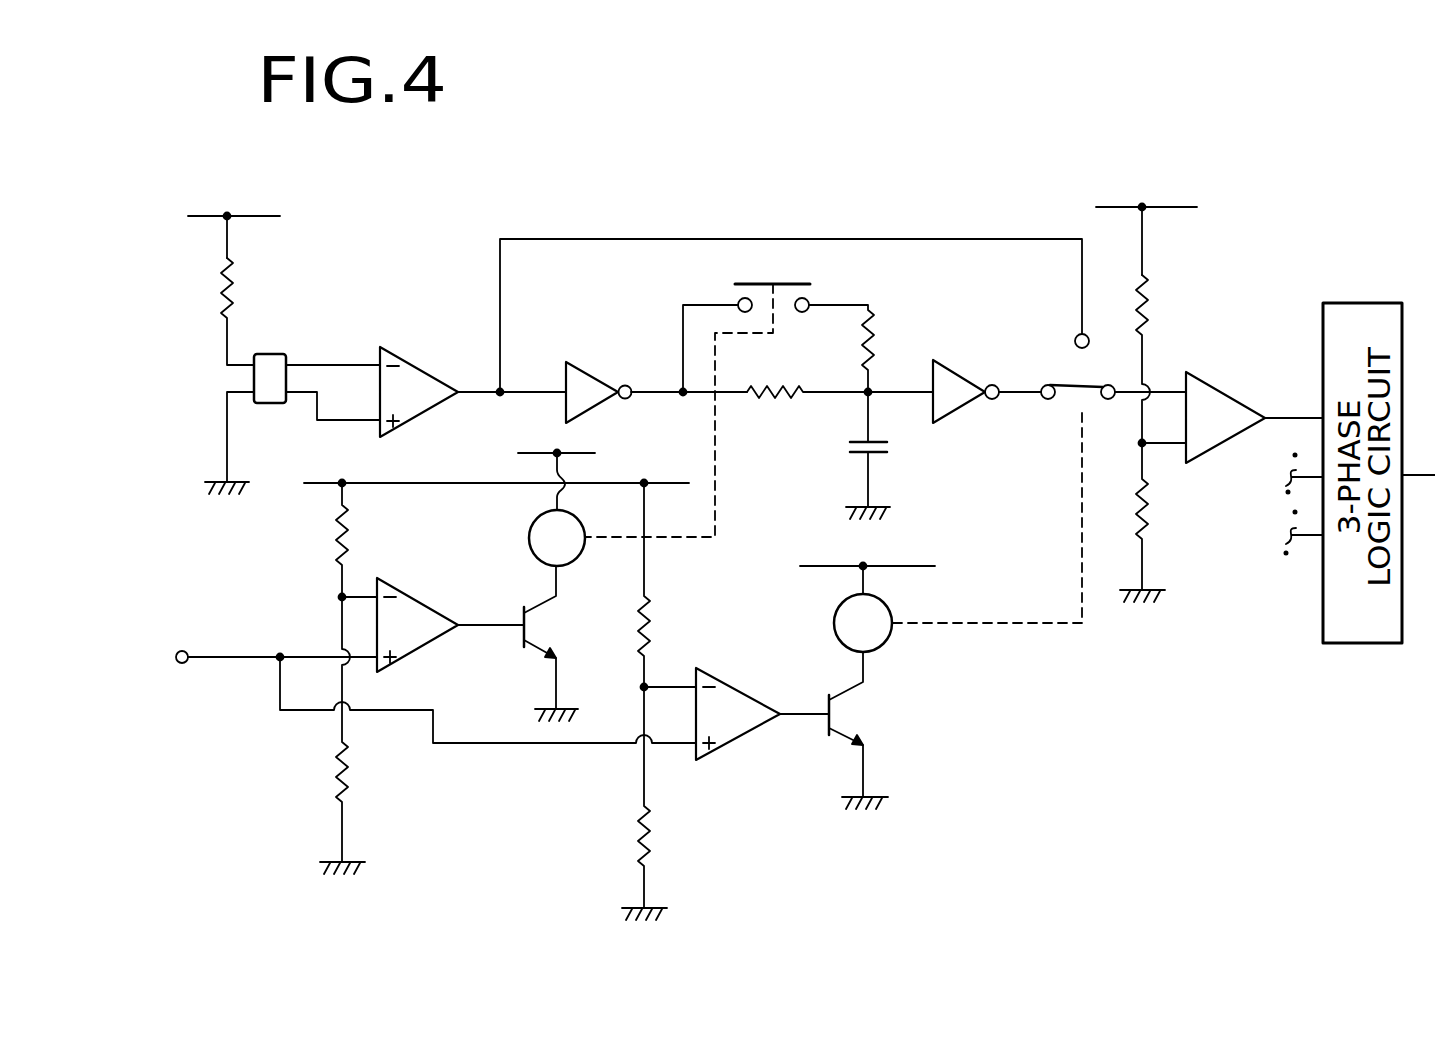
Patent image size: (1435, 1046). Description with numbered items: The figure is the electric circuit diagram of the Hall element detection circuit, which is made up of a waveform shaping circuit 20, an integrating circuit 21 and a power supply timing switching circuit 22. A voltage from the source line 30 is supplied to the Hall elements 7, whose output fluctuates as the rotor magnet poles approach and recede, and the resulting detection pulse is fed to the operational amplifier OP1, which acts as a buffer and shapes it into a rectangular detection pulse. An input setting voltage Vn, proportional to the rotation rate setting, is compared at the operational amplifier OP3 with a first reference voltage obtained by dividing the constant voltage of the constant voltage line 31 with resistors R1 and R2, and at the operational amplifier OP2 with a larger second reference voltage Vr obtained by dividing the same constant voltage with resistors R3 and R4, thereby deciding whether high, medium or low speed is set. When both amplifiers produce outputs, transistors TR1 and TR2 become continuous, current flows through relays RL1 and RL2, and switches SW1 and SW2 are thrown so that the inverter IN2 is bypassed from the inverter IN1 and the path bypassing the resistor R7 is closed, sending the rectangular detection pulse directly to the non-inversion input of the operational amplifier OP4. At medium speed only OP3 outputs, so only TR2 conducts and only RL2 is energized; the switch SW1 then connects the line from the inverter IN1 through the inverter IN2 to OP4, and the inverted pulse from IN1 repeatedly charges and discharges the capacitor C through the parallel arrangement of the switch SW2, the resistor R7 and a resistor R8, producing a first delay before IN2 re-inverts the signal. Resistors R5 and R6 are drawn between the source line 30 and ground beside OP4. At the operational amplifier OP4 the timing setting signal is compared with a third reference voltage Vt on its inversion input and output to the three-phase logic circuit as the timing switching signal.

The Hall elements 7 is at (278, 354).
The waveform shaping circuit 20 is at (473, 314).
The integrating circuit 21 is at (853, 341).
The power supply timing switching circuit 22 is at (1254, 410).
The source line 30 is at (253, 216).
The constant voltage line 31 is at (436, 483).
The operational amplifier OP1 is at (423, 368).
The operational amplifier OP2 is at (746, 742).
The operational amplifier OP3 is at (428, 603).
The operational amplifier OP4 is at (1211, 455).
The inverter IN1 is at (587, 372).
The inverter IN2 is at (958, 413).
The switch SW1 is at (1058, 347).
The switch SW2 is at (778, 282).
The resistor R1 is at (366, 540).
The resistor R2 is at (358, 735).
The resistor R3 is at (670, 585).
The resistor R4 is at (662, 803).
The resistor R5 is at (1166, 359).
The resistor R6 is at (1158, 521).
The resistor R7 is at (807, 411).
The resistor R8 is at (841, 348).
The capacitor C is at (858, 454).
The transistor TR1 is at (858, 713).
The transistor TR2 is at (518, 640).
The relay RL1 is at (866, 641).
The relay RL2 is at (580, 546).
The input setting voltage Vn is at (436, 682).
The second reference voltage Vr is at (644, 687).
The third reference voltage Vt is at (1141, 444).